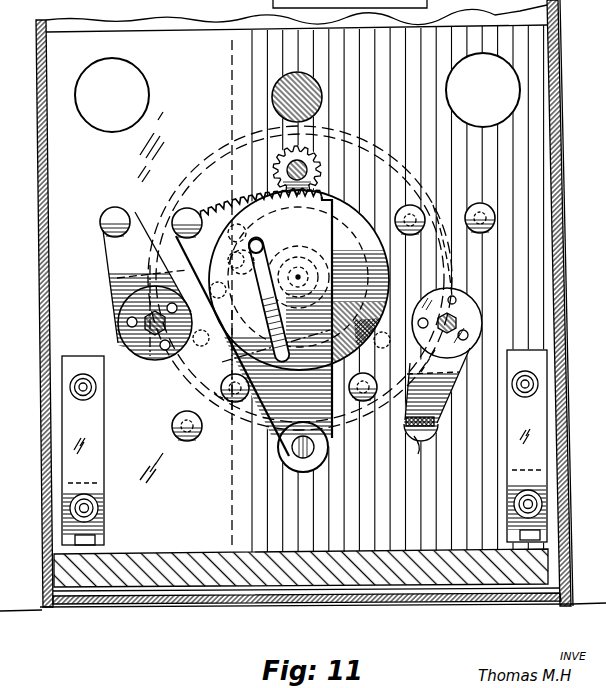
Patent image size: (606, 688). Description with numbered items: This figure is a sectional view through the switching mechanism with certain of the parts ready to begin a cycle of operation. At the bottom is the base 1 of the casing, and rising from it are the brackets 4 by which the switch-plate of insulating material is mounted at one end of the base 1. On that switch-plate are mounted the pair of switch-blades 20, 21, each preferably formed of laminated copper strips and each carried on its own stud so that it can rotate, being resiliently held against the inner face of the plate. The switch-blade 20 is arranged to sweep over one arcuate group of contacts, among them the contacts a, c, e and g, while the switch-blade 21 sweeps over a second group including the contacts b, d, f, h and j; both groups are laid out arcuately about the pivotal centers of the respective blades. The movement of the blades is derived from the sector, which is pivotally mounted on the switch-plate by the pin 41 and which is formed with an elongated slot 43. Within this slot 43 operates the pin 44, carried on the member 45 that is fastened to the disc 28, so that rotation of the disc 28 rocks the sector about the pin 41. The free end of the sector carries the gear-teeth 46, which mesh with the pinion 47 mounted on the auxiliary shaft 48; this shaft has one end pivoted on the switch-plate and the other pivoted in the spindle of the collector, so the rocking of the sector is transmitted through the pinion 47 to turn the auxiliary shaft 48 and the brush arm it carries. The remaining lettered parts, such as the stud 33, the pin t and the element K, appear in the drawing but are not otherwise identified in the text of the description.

The base 1 is at (182, 576).
The bracket 4 is at (66, 494).
The switch-blade 20 is at (417, 400).
The switch-blade 21 is at (120, 287).
The disc 28 is at (322, 250).
The stud 33 is at (407, 206).
The pin 41 is at (284, 456).
The elongated slot 43 is at (226, 398).
The pin 44 is at (264, 250).
The member 45 is at (384, 300).
The gear-teeth 46 is at (230, 202).
The pinion 47 is at (324, 174).
The auxiliary shaft 48 is at (308, 166).
The contact a is at (481, 208).
The contact b is at (173, 426).
The contact c is at (337, 276).
The contact d is at (221, 388).
The contact e is at (104, 232).
The contact f is at (203, 342).
The contact g is at (385, 342).
The contact h is at (218, 292).
The contact j is at (187, 233).
The pin t is at (369, 386).
The roller K is at (418, 440).